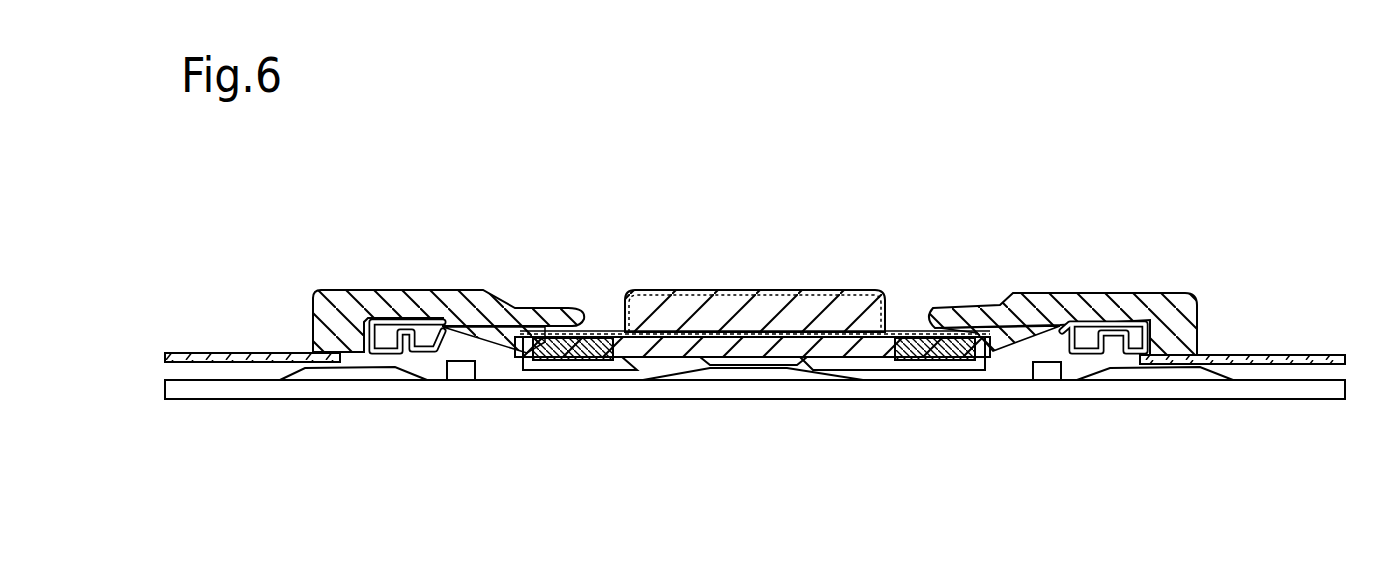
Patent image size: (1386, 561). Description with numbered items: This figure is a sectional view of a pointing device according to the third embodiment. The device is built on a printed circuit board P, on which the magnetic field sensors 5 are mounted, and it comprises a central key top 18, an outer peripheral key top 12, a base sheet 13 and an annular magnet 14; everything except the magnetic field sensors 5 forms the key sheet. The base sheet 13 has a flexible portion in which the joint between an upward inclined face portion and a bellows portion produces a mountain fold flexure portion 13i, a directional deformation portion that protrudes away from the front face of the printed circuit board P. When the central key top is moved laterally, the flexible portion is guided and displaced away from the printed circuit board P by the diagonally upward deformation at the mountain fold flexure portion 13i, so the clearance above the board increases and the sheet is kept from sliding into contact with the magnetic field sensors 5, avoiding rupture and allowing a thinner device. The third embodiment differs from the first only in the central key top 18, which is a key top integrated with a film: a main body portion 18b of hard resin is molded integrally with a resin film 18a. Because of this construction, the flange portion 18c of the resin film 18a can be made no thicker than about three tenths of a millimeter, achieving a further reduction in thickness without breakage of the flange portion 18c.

The magnetic field sensor 5 is at (488, 380).
The outer peripheral key top 12 is at (1134, 289).
The base sheet 13 is at (1242, 351).
The mountain fold flexure portion 13i is at (440, 324).
The annular magnet 14 is at (910, 370).
The central key top 18 is at (752, 334).
The resin film 18a is at (750, 290).
The main body portion 18b is at (663, 291).
The flange portion 18c is at (596, 335).
The printed circuit board P is at (1267, 399).